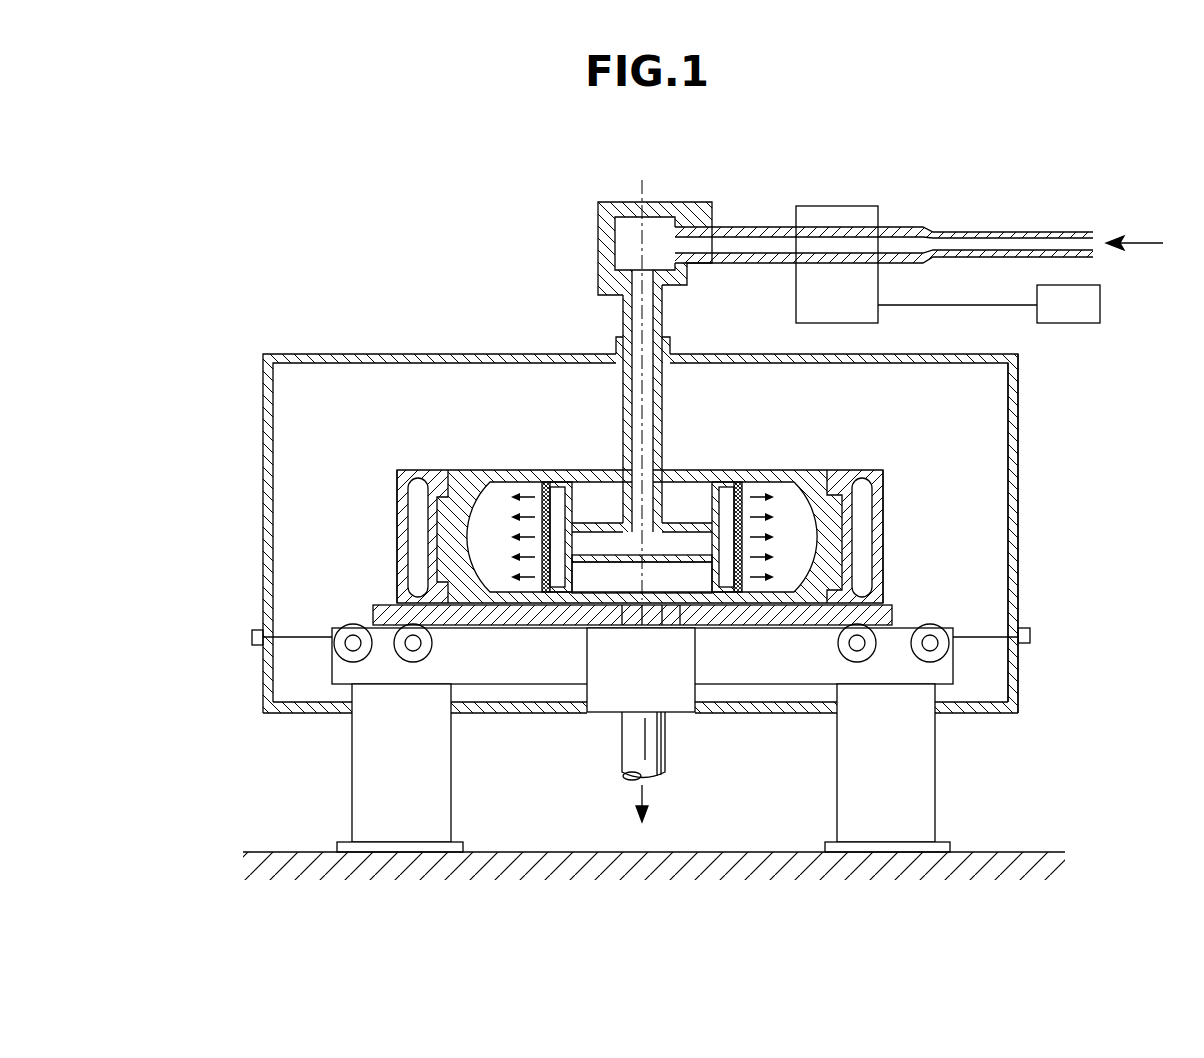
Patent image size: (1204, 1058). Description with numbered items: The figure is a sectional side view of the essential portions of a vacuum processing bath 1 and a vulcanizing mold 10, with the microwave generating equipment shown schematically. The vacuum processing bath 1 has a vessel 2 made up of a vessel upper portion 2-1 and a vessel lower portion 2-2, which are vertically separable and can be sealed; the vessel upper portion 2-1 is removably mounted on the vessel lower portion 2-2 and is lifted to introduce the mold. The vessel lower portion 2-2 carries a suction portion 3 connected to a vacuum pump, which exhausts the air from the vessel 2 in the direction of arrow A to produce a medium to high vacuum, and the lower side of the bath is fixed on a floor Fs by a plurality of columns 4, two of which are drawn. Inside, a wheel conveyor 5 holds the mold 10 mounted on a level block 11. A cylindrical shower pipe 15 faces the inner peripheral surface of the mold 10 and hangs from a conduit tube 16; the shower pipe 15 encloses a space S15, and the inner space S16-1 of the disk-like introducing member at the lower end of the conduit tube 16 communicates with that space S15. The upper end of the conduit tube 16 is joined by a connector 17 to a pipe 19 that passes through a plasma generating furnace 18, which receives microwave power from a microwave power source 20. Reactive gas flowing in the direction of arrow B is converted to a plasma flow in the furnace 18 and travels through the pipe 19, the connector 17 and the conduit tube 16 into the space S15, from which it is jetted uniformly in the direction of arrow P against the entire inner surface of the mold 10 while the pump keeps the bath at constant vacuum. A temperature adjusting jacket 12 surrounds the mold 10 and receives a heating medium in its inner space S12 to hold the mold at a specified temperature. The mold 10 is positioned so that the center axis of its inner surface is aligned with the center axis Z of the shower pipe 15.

The vacuum processing bath 1 is at (1040, 412).
The vessel 2 is at (698, 533).
The vessel upper portion 2-1 is at (1020, 567).
The vessel lower portion 2-2 is at (1018, 692).
The suction portion 3 is at (605, 734).
The columns 4 is at (355, 746).
The wheel conveyor 5 is at (955, 650).
The vulcanizing mold 10 is at (640, 501).
The level block 11 is at (893, 612).
The temperature adjusting jacket 12 is at (682, 509).
The shower pipe 15 is at (641, 496).
The conduit tube 16 is at (602, 390).
The connector 17 is at (673, 205).
The plasma generating furnace 18 is at (843, 210).
The pipe 19 is at (757, 228).
The microwave power source 20 is at (1100, 305).
The inner space of jacket S12 is at (862, 505).
The space of shower pipe S15 is at (556, 496).
The inner space of introducing member S16-1 is at (596, 540).
The center axis of shower pipe Z is at (558, 386).
The arrow P is at (803, 480).
The arrow A is at (652, 813).
The arrow B is at (1149, 243).
The floor Fs is at (288, 851).